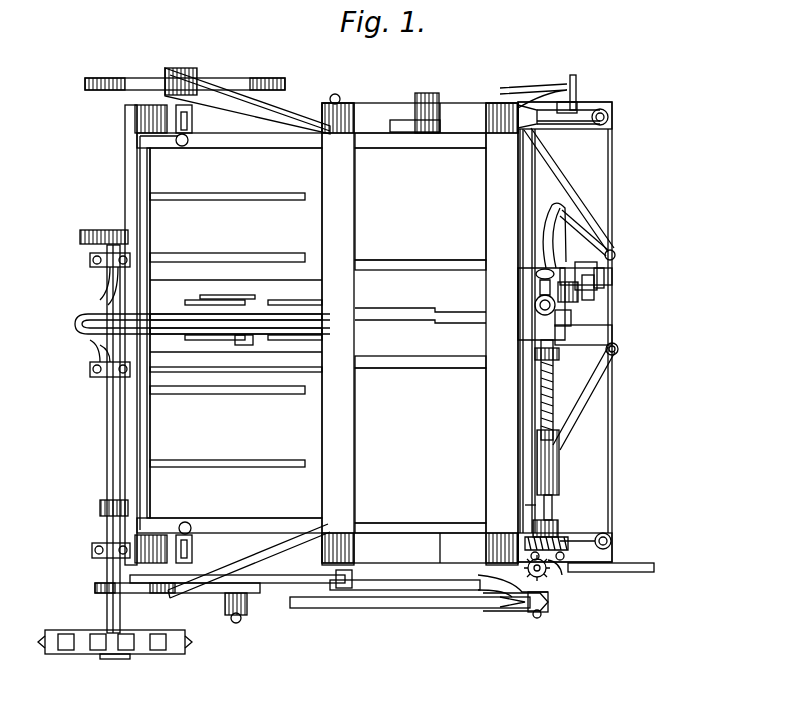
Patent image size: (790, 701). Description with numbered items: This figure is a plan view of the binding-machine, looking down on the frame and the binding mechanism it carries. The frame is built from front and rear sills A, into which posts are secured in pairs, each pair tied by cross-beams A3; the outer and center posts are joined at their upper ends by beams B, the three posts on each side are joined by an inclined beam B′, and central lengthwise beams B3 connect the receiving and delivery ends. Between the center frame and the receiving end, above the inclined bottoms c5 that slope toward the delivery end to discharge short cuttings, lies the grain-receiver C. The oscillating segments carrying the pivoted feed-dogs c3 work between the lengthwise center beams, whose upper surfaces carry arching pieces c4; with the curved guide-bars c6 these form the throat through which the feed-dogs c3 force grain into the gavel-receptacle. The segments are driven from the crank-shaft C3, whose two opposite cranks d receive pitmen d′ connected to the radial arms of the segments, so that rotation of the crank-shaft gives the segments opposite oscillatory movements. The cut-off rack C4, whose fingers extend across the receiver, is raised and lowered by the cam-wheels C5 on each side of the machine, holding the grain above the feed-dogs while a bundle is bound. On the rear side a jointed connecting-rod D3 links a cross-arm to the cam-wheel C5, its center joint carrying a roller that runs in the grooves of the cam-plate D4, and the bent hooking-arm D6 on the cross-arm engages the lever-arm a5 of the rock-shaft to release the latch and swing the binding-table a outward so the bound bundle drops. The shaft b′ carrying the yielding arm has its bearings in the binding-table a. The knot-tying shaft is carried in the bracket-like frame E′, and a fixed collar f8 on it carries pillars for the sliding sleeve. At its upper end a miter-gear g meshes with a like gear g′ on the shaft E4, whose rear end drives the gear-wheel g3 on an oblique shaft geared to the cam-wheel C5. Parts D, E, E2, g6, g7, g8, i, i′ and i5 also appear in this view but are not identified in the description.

The front and rear sills A is at (420, 333).
The cross-beams A3 is at (420, 334).
The beams B is at (420, 335).
The inclined beam B′ is at (223, 335).
The central lengthwise beams B3 is at (236, 318).
The grain-receiver portion C is at (236, 333).
The crank-shaft C3 is at (109, 439).
The cut-off rack C4 is at (139, 334).
The cam-wheel C5 is at (262, 339).
The feed-dogs c3 is at (253, 316).
The arching pieces c4 is at (227, 290).
The inclined bottoms c5 is at (420, 335).
The curved guide-bars c6 is at (420, 314).
The lever D is at (513, 581).
The jointed connecting-rod D3 is at (419, 615).
The cam-plate D4 is at (405, 587).
The bent hooking-arm D6 is at (241, 581).
The bearing block E is at (541, 304).
The bracket-like frame E′ is at (591, 276).
The bearing E2 is at (534, 287).
The shaft E4 is at (552, 511).
The binding-table a is at (571, 332).
The lever-arm a5 is at (611, 575).
The shaft b′ is at (569, 194).
The cranks d is at (98, 315).
The pitmen d′ is at (190, 328).
The fixed collar f8 is at (121, 643).
The miter-gear wheel g is at (544, 380).
The gear-wheel g′ is at (565, 322).
The gear-wheel g3 is at (546, 562).
The screw stem g6 is at (561, 499).
The screw sleeve g7 is at (557, 462).
The diagonal link g8 is at (585, 396).
The curved arm i is at (575, 253).
The arm block i′ is at (588, 294).
The arm hub i5 is at (569, 300).